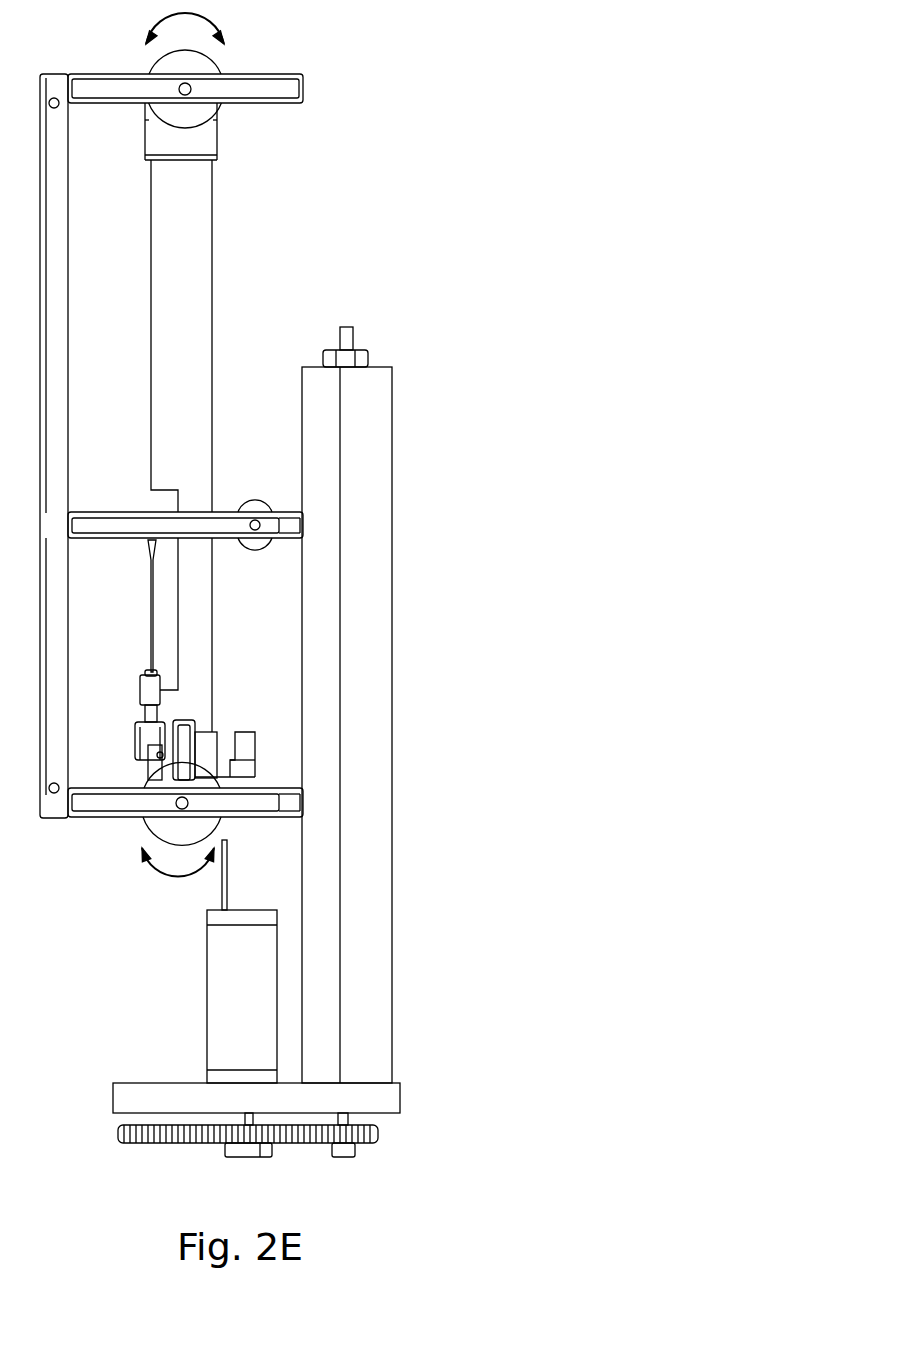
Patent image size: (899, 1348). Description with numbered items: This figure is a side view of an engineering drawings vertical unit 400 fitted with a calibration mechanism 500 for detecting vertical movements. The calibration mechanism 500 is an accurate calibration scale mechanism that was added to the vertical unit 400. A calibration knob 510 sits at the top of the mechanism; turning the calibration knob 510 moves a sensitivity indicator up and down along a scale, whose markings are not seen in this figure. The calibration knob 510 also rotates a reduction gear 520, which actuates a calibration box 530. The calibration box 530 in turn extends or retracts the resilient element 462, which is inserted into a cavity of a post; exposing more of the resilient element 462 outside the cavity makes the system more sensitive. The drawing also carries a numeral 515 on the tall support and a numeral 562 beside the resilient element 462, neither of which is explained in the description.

The engineering drawings vertical unit 400 is at (413, 88).
The calibration mechanism 500 is at (507, 565).
The calibration knob 510 is at (362, 342).
The vertical support column 515 is at (392, 908).
The reduction gear 520 is at (298, 1157).
The calibration box 530 is at (215, 995).
The drive rod 562 is at (222, 893).
The resilient element 462 is at (134, 888).